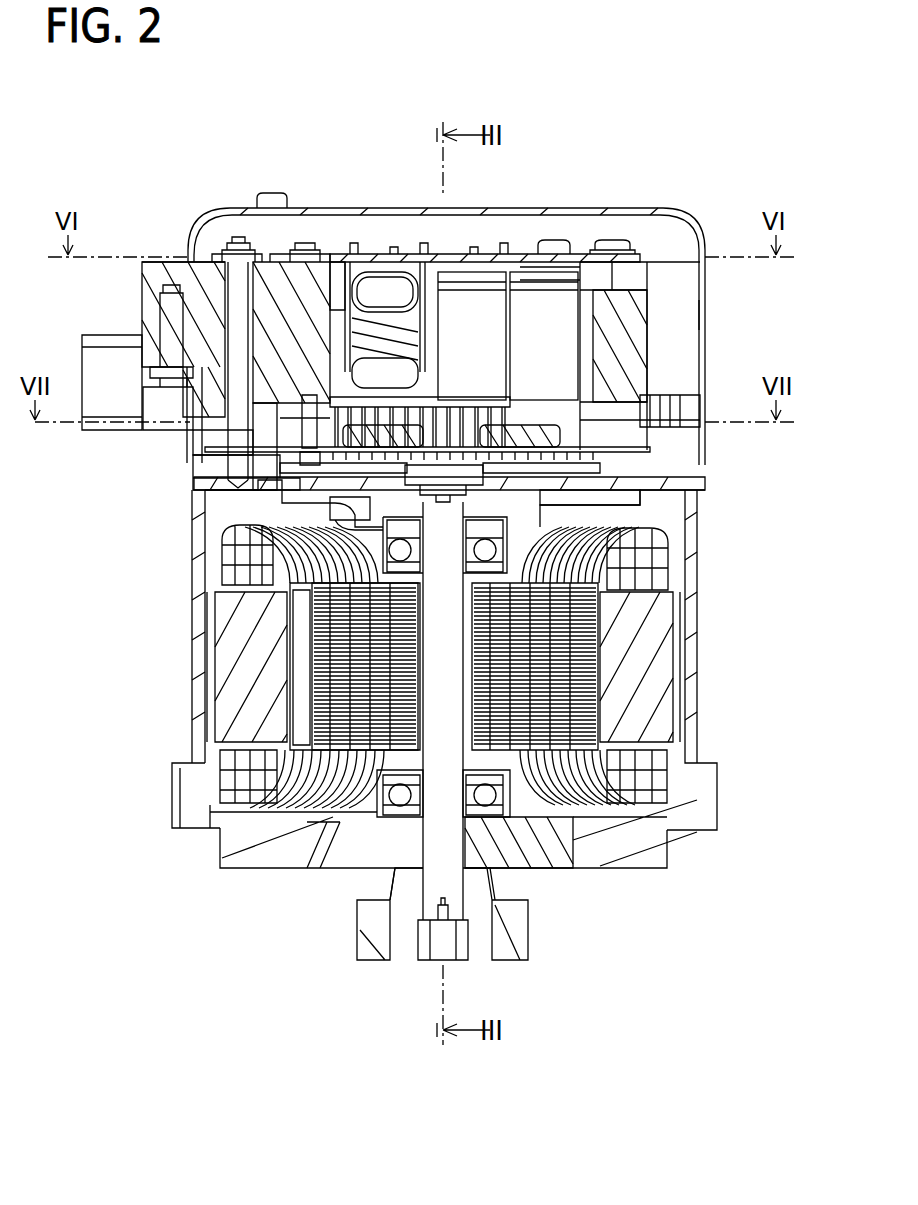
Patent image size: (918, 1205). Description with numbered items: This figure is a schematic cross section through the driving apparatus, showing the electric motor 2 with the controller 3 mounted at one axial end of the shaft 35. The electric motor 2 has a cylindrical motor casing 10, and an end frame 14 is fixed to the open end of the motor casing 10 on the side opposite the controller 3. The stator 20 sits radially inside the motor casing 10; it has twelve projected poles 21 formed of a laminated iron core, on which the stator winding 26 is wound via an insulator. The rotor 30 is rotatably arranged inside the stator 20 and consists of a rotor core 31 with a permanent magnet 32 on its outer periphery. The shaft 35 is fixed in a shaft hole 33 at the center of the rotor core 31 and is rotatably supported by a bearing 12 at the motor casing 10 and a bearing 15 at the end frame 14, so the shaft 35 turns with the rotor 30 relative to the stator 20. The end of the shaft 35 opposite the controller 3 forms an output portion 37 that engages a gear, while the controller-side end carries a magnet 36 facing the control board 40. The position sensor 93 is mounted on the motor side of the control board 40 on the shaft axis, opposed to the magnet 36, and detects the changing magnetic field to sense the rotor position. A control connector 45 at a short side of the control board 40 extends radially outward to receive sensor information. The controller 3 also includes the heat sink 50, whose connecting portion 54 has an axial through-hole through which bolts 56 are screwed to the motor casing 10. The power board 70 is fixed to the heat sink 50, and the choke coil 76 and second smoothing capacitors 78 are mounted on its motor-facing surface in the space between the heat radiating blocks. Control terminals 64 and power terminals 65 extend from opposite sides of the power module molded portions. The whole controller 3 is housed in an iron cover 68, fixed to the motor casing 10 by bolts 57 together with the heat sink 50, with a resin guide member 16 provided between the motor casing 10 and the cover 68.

The electric motor 2 is at (726, 600).
The controller 3 is at (653, 230).
The motor casing 10 is at (690, 703).
The bearing 12 is at (645, 555).
The end frame 14 is at (652, 850).
The bearing 15 is at (530, 840).
The resin guide member 16 is at (695, 477).
The stator 20 is at (653, 648).
The projected poles 21 is at (235, 688).
The stator winding 26 is at (655, 525).
The rotor 30 is at (320, 700).
The rotor core 31 is at (300, 632).
The permanent magnet 32 is at (300, 602).
The shaft hole 33 is at (500, 800).
The shaft 35 is at (430, 845).
The magnet 36 is at (320, 485).
The output portion 37 is at (372, 945).
The control board 40 is at (622, 445).
The control connector 45 is at (80, 340).
The heat sink 50 is at (140, 285).
The connecting portion 54 is at (200, 258).
The bolts 56 is at (232, 245).
The bolts 57 is at (272, 192).
The control terminals 64 is at (310, 423).
The power terminals 65 is at (397, 250).
The cover 68 is at (700, 232).
The power board 70 is at (305, 245).
The choke coil 76 is at (365, 270).
The second smoothing capacitors 78 is at (468, 290).
The position sensor 93 is at (260, 470).